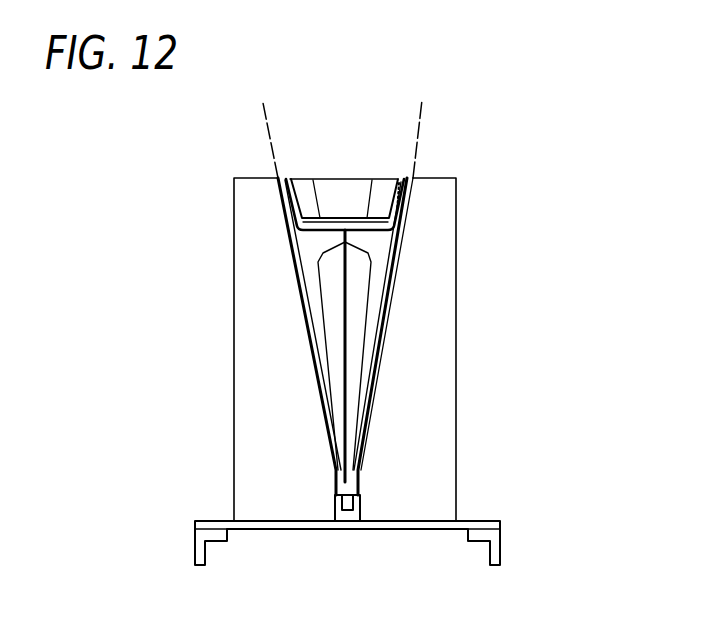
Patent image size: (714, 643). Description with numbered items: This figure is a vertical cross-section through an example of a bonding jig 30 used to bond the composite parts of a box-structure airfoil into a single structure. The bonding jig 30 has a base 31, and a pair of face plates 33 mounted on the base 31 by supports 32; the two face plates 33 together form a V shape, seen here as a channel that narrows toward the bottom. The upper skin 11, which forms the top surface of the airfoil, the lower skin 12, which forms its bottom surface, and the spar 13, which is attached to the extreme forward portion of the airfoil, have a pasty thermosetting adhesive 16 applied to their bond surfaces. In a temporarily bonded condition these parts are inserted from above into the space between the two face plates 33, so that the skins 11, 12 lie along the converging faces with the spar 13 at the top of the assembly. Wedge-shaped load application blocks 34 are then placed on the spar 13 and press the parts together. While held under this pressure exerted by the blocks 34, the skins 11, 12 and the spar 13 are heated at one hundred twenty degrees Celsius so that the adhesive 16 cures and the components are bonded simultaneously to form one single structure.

The bonding jig 30 is at (505, 130).
The base 31 is at (392, 531).
The supports 32 is at (246, 249).
The face plates 33 is at (323, 408).
The upper skin 11 is at (318, 308).
The lower skin 12 is at (379, 302).
The spar 13 is at (411, 184).
The pasty thermosetting adhesive 16 is at (380, 247).
The load application blocks 34 is at (378, 188).